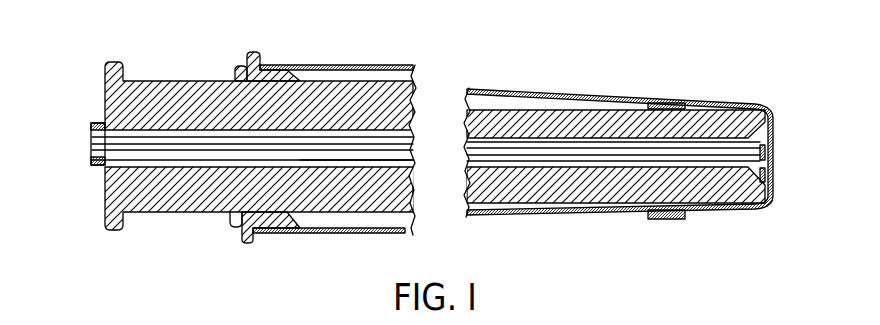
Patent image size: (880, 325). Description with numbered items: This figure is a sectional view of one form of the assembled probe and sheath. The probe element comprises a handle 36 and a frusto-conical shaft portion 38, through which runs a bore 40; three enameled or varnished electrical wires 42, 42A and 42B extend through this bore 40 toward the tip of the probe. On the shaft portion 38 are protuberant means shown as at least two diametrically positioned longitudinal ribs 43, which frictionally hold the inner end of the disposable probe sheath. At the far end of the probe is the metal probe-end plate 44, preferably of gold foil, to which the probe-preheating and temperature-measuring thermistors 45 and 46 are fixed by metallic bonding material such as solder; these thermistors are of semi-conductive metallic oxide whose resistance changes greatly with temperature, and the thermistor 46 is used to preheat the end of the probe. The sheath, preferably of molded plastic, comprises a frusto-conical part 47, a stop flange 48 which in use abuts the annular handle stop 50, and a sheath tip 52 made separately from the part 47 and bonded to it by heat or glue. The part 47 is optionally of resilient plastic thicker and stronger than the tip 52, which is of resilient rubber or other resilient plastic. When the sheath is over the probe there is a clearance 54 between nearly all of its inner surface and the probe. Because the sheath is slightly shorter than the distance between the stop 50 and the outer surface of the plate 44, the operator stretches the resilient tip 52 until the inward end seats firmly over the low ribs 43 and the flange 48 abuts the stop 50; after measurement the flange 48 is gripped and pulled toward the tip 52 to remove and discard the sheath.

The handle 36 is at (216, 213).
The frusto-conical shaft portion 38 is at (348, 213).
The bore 40 is at (410, 110).
The electrical wire 42 is at (405, 143).
The electrical wire 42A is at (91, 146).
The electrical wire 42B is at (385, 158).
The longitudinal ribs 43 is at (262, 70).
The probe-end plate 44 is at (765, 118).
The thermistor 45 is at (773, 148).
The preheating thermistor 46 is at (768, 185).
The frusto-conical part 47 is at (535, 216).
The stop flange 48 is at (250, 237).
The annular handle stop 50 is at (240, 65).
The sheath tip 52 is at (660, 220).
The clearance 54 is at (590, 105).